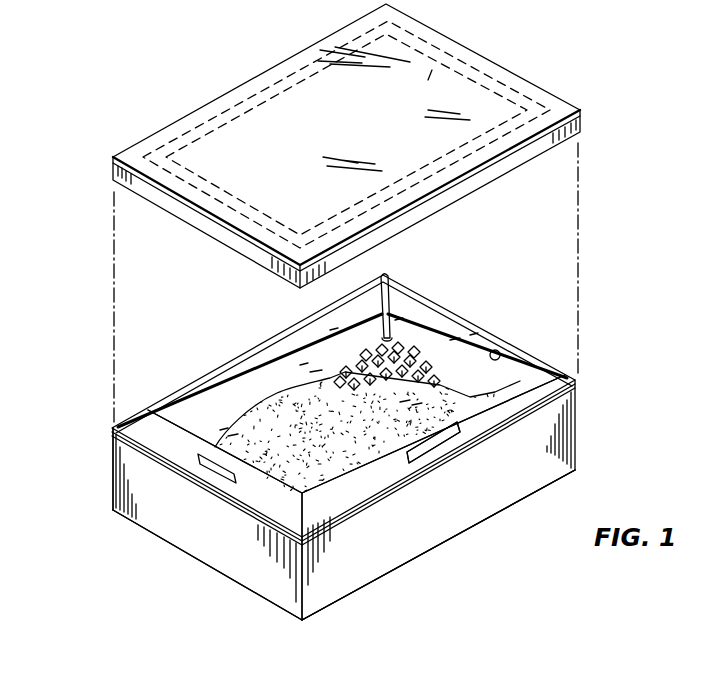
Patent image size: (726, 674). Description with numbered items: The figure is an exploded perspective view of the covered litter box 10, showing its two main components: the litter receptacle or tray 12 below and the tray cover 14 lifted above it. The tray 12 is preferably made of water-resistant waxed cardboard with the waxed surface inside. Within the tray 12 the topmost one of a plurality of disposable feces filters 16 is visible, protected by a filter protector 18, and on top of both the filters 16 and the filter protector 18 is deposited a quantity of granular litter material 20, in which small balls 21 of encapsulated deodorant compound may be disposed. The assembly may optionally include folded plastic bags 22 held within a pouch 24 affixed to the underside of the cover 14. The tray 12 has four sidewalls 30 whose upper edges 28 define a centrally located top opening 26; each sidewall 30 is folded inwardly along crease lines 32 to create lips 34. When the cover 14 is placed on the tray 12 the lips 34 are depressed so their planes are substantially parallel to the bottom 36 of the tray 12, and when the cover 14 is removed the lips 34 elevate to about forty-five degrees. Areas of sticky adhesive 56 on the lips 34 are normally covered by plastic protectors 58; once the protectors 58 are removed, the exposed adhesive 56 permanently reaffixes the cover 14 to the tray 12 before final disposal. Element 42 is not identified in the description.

The covered litter box 10 is at (630, 251).
The litter receptacle or tray 12 is at (565, 432).
The tray cover 14 is at (553, 112).
The feces filters 16 is at (410, 340).
The filter protector 18 is at (340, 334).
The litter material 20 is at (262, 428).
The small balls 21 is at (287, 400).
The folded plastic bags 22 is at (180, 208).
The pouch 24 is at (458, 47).
The top opening 26 is at (455, 368).
The upper edges 28 is at (567, 378).
The sidewalls 30 is at (229, 566).
The crease lines 32 is at (300, 543).
The lips 34 is at (183, 418).
The bottom 36 is at (325, 607).
The liner flap 42 is at (217, 420).
The adhesive areas 56 is at (212, 470).
The plastic protectors 58 is at (460, 443).